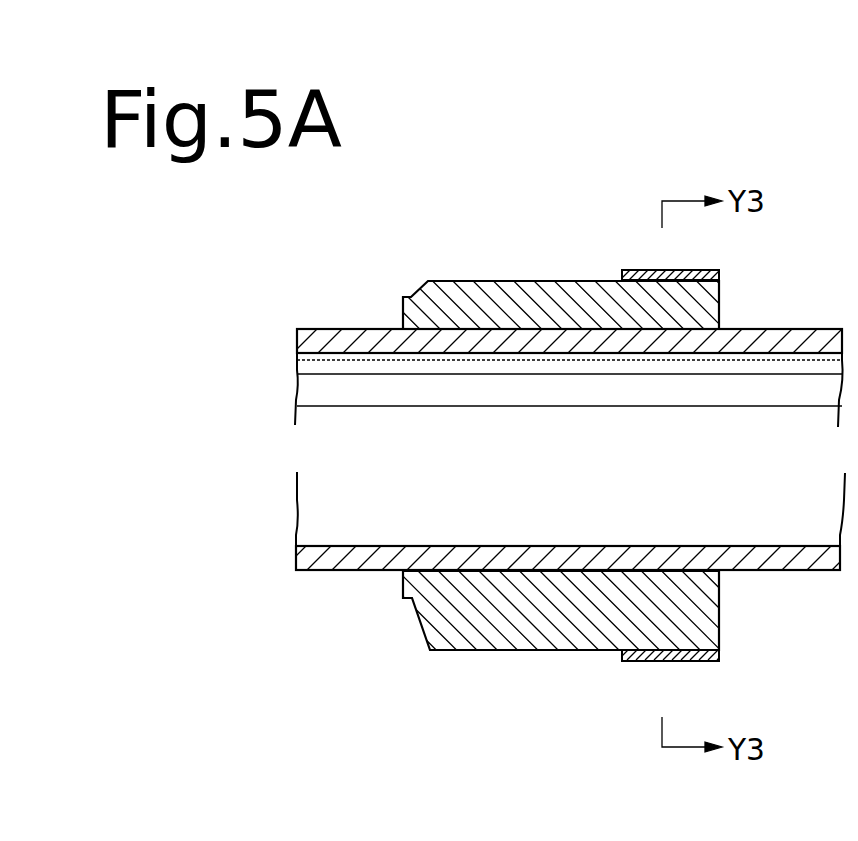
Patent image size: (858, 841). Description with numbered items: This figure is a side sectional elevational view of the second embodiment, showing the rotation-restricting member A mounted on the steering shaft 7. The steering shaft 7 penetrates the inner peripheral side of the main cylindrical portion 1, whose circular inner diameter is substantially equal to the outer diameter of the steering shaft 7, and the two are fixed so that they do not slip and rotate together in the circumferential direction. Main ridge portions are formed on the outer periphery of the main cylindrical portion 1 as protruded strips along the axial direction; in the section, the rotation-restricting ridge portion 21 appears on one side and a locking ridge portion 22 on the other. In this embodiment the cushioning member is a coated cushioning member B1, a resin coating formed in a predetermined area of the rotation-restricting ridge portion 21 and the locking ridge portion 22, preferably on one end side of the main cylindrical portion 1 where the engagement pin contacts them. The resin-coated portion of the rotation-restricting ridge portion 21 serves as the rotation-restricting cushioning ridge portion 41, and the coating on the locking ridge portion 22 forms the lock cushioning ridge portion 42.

The main cylindrical portion 1 is at (505, 463).
The steering shaft 7 is at (376, 327).
The rotation-restricting ridge portion 21 is at (528, 652).
The locking ridge portion 22 is at (513, 282).
The rotation-restricting cushioning ridge portion 41 is at (703, 664).
The lock cushioning ridge portion 42 is at (652, 269).
The rotation-restricting member A is at (540, 268).
The coated cushioning member B1 is at (716, 258).